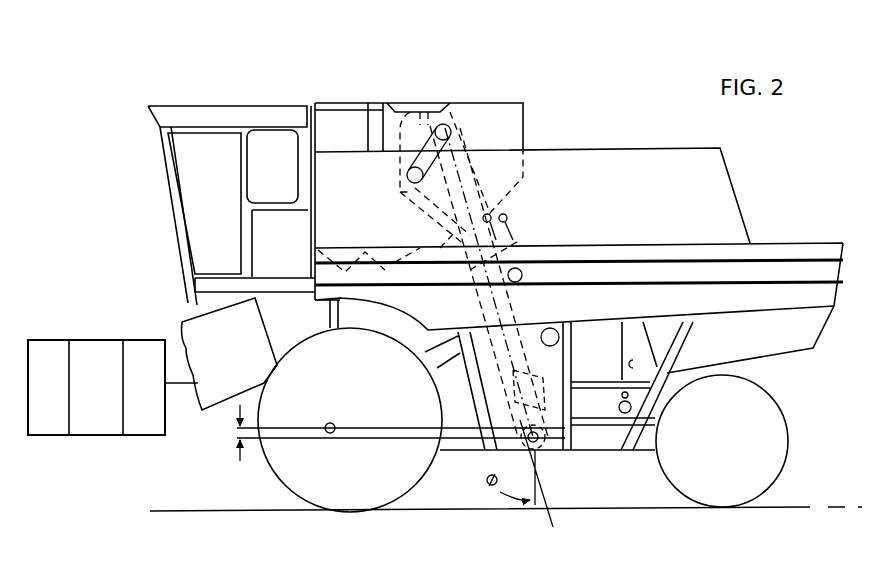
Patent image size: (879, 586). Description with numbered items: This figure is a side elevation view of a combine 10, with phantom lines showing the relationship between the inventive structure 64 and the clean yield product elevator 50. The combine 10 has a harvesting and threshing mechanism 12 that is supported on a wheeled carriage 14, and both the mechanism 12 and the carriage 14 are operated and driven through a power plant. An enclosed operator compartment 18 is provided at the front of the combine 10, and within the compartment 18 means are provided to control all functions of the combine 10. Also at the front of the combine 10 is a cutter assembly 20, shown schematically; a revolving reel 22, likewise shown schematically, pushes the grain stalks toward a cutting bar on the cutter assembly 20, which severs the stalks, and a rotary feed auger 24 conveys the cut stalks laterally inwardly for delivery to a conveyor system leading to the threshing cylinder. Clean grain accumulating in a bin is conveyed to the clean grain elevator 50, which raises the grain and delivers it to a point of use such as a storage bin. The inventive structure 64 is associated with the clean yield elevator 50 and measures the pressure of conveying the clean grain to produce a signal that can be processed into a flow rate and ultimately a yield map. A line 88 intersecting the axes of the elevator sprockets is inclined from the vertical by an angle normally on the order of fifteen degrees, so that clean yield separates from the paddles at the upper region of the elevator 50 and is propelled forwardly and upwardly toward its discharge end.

The combine 10 is at (570, 106).
The harvesting and threshing mechanism 12 is at (628, 198).
The wheeled carriage 14 is at (638, 457).
The enclosed operator compartment 18 is at (196, 104).
The cutter assembly 20 is at (106, 413).
The revolving reel 22 is at (60, 396).
The rotary feed auger 24 is at (152, 397).
The clean grain elevator 50 is at (480, 186).
The inventive structure 64 is at (418, 100).
The line 88 is at (502, 316).